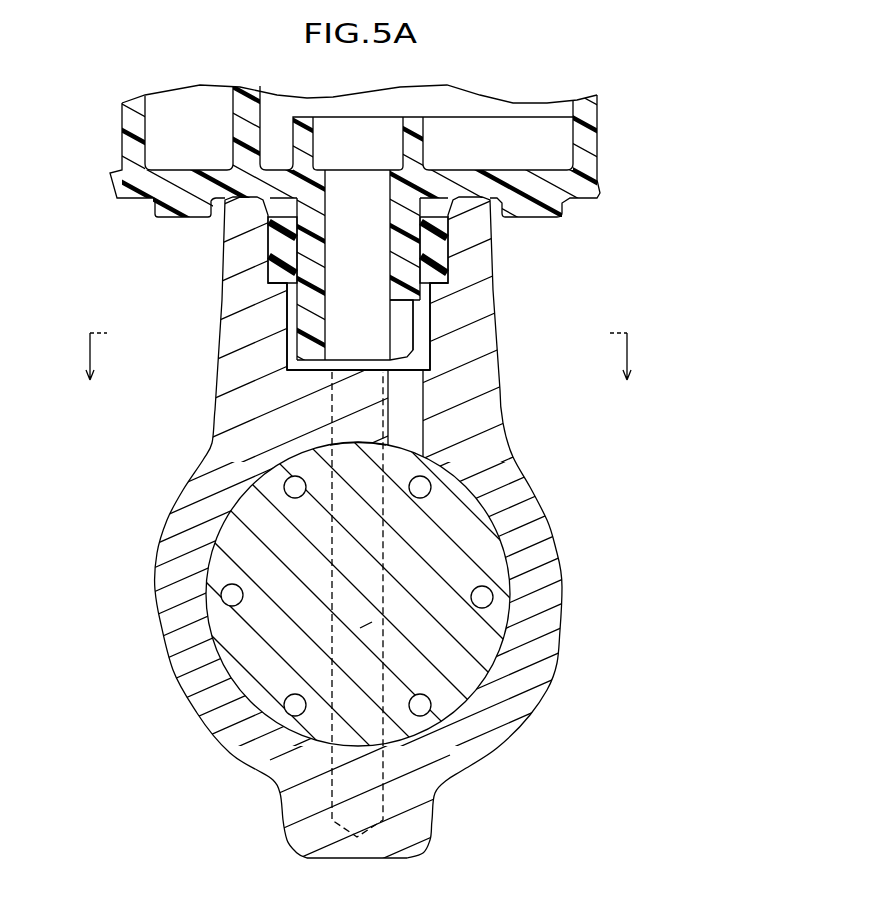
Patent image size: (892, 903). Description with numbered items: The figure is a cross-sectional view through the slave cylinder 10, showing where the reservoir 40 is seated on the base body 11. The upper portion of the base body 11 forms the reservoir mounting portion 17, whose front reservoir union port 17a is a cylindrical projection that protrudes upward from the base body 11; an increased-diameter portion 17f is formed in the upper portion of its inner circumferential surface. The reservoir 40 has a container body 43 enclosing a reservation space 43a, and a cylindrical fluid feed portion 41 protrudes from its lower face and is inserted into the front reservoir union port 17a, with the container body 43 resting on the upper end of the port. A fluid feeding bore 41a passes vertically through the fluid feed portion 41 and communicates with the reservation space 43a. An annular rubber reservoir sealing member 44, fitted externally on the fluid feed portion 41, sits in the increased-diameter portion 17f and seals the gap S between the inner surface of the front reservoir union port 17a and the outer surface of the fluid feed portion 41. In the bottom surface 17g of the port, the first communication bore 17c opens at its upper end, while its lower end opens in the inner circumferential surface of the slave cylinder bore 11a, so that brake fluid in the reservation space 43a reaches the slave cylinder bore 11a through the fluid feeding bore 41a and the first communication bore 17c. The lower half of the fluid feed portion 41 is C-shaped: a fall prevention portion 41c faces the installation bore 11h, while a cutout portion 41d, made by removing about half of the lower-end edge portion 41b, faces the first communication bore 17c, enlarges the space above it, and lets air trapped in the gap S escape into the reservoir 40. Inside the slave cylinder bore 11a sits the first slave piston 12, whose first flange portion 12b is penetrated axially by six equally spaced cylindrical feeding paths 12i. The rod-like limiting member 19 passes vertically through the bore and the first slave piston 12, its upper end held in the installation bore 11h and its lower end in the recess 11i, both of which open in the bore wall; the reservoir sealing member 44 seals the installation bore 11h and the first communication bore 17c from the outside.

The attachment structure 10 is at (658, 243).
The base body 11 is at (515, 429).
The slave cylinder bore 11a is at (490, 562).
The installation bore 11h is at (345, 435).
The recess 11i is at (370, 803).
The first slave piston 12 is at (178, 690).
The first flange portion 12b is at (206, 664).
The feeding paths 12i is at (285, 484).
The reservoir mounting portion 17 is at (218, 279).
The front reservoir union port 17a is at (425, 332).
The first communication bore 17c is at (487, 412).
The increased-diameter portion 17f is at (262, 250).
The bottom surface 17g is at (300, 369).
The limiting member 19 is at (368, 625).
The reservoir 40 is at (608, 117).
The fluid feed portion 41 is at (415, 255).
The fluid feeding bore 41a is at (340, 180).
The lower-end edge portion 41b is at (398, 366).
The fall prevention portion 41c is at (310, 333).
The cutout portion 41d is at (408, 310).
The container body 43 is at (583, 148).
The reservation space 43a is at (518, 154).
The reservoir sealing member 44 is at (440, 280).
The gap S is at (290, 303).